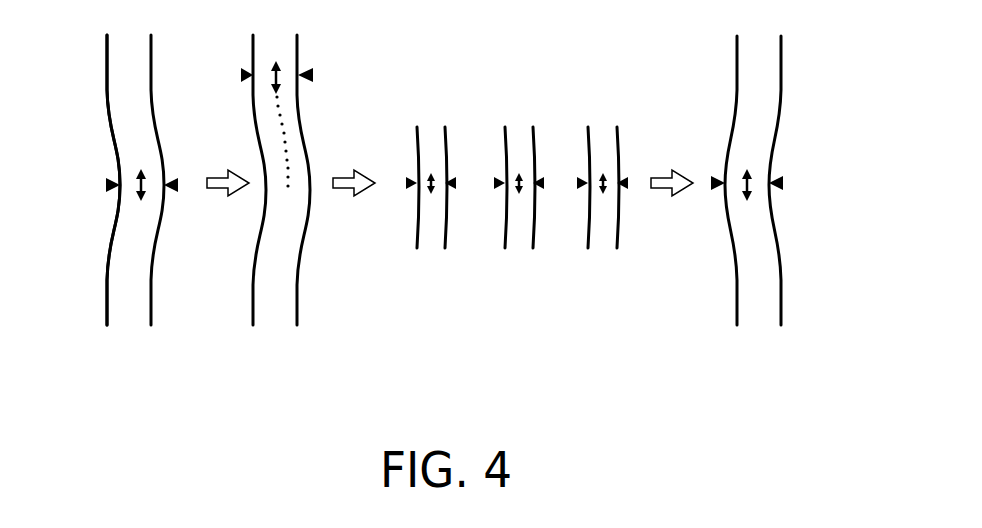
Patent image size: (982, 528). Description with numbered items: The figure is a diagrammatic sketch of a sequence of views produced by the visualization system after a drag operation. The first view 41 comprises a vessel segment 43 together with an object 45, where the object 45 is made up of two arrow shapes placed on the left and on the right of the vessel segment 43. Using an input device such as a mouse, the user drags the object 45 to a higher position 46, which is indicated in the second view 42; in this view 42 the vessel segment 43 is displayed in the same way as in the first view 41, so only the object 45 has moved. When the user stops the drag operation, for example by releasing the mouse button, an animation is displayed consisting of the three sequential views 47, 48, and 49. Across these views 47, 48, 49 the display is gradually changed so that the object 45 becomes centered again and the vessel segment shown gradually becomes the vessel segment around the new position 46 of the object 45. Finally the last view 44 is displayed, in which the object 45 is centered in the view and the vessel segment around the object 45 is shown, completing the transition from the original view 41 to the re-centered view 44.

The view 41 is at (132, 347).
The view 42 is at (275, 347).
The vessel segment 43 is at (108, 275).
The view 44 is at (757, 347).
The object 45 is at (105, 184).
The higher position 46 is at (313, 76).
The view 47 is at (432, 270).
The view 48 is at (517, 270).
The view 49 is at (604, 270).